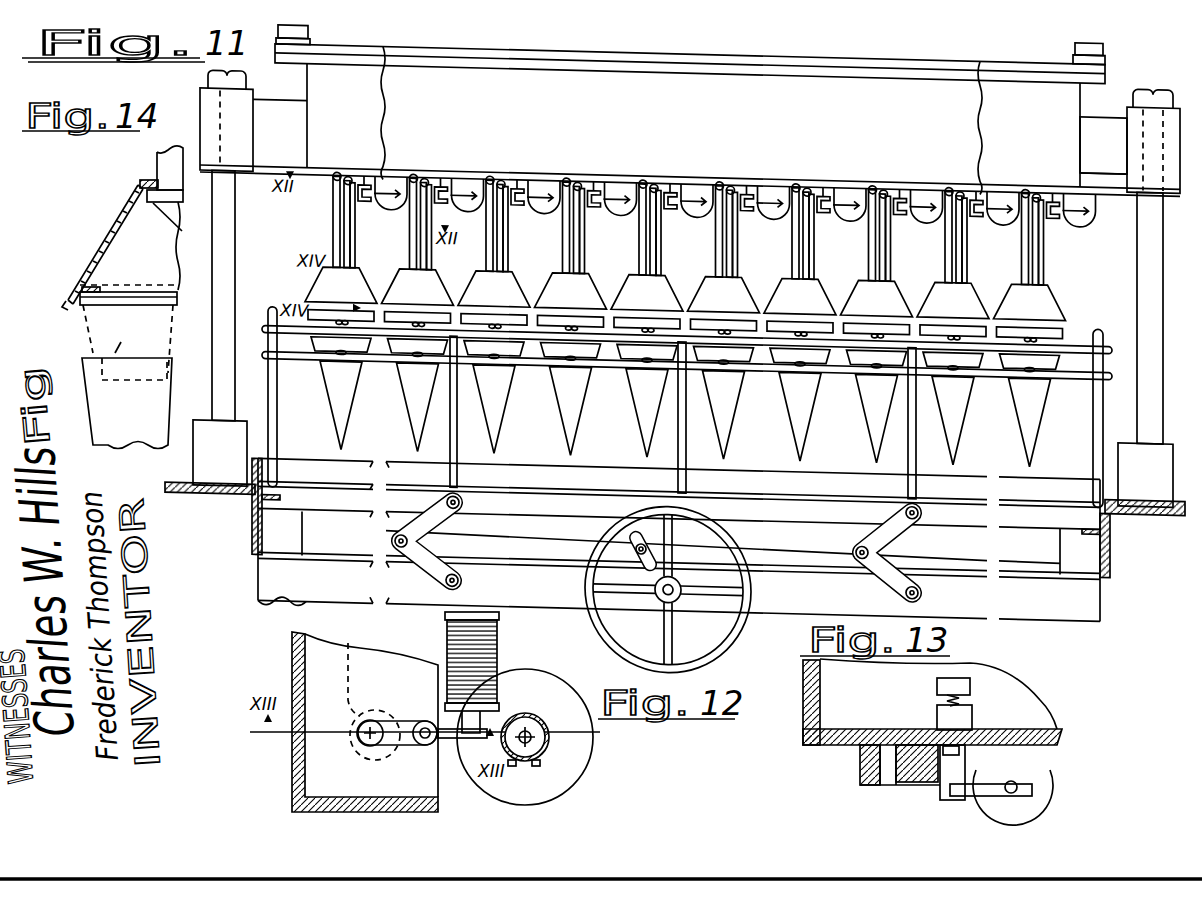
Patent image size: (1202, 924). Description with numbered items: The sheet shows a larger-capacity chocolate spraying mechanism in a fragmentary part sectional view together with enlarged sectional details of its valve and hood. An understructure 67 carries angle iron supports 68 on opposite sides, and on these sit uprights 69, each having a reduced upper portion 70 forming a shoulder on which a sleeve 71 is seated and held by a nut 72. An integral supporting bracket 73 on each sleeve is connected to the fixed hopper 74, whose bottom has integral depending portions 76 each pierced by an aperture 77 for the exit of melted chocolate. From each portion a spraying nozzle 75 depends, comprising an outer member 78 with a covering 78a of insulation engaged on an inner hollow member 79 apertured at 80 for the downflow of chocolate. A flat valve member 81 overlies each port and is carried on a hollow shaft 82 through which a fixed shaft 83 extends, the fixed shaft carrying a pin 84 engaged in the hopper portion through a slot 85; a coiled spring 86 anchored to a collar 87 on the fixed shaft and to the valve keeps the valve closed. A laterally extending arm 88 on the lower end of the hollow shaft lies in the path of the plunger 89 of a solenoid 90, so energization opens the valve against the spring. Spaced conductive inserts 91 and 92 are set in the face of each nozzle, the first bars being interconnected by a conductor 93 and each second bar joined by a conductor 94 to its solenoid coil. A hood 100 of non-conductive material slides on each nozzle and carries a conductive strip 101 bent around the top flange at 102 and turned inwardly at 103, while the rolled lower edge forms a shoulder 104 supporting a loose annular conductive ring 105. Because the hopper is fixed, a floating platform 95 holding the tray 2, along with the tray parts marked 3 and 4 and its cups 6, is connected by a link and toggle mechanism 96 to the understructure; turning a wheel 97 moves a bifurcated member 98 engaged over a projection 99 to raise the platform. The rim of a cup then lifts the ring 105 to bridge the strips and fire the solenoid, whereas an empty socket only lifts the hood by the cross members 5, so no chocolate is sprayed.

In FIG. 11, the tray 2 is at (1116, 307).
In FIG. 11, the vertical rod 3 is at (1094, 409).
In FIG. 11, the support bar 4 is at (1085, 354).
In FIG. 11, the cross members 5 is at (855, 381).
In FIG. 11, the cup 6 is at (566, 394).
In FIG. 14, the cup 6 is at (102, 392).
In FIG. 11, the understructure 67 is at (1084, 610).
In FIG. 11, the angle iron supports 68 is at (251, 502).
In FIG. 11, the uprights 69 is at (1140, 250).
In FIG. 11, the reduced upper portion 70 is at (1152, 132).
In FIG. 11, the sleeve 71 is at (1118, 201).
In FIG. 11, the nut 72 is at (1156, 70).
In FIG. 11, the supporting bracket 73 is at (1103, 145).
In FIG. 11, the hopper 74 is at (690, 110).
In FIG. 12, the hopper 74 is at (368, 670).
In FIG. 13, the hopper 74 is at (1028, 728).
In FIG. 11, the spraying nozzle 75 is at (636, 252).
In FIG. 12, the spraying nozzle 75 is at (553, 668).
In FIG. 14, the spraying nozzle 75 is at (160, 150).
In FIG. 11, the depending portions 76 is at (335, 172).
In FIG. 13, the depending portions 76 is at (905, 786).
In FIG. 12, the aperture 77 is at (388, 700).
In FIG. 13, the aperture 77 is at (866, 762).
In FIG. 12, the outer member 78 is at (592, 737).
In FIG. 12, the covering of insulation 78a is at (542, 733).
In FIG. 12, the inner hollow member 79 is at (550, 744).
In FIG. 12, the aperture 80 is at (532, 730).
In FIG. 12, the flat valve member 81 is at (392, 730).
In FIG. 13, the flat valve member 81 is at (880, 745).
In FIG. 13, the shaft 82 is at (966, 760).
In FIG. 12, the fixed shaft 83 is at (424, 742).
In FIG. 13, the fixed shaft 83 is at (972, 714).
In FIG. 13, the pin 84 is at (935, 750).
In FIG. 13, the slot 85 is at (950, 790).
In FIG. 13, the coiled spring 86 is at (945, 698).
In FIG. 12, the collar 87 is at (448, 762).
In FIG. 13, the collar 87 is at (970, 688).
In FIG. 11, the laterally extending arm 88 is at (545, 192).
In FIG. 12, the laterally extending arm 88 is at (466, 751).
In FIG. 13, the laterally extending arm 88 is at (1035, 791).
In FIG. 12, the plunger 89 is at (499, 706).
In FIG. 13, the plunger 89 is at (1018, 784).
In FIG. 11, the solenoid 90 is at (576, 190).
In FIG. 12, the solenoid 90 is at (497, 662).
In FIG. 13, the solenoid 90 is at (1030, 809).
In FIG. 11, the conductive insert 91 is at (490, 236).
In FIG. 12, the conductive insert 91 is at (514, 766).
In FIG. 11, the conductive insert 92 is at (502, 249).
In FIG. 12, the conductive insert 92 is at (536, 766).
In FIG. 14, the conductive insert 92 is at (141, 181).
In FIG. 11, the conductor 93 is at (514, 176).
In FIG. 11, the conductor 94 is at (545, 181).
In FIG. 11, the floating platform 95 is at (950, 510).
In FIG. 11, the link and toggle mechanism 96 is at (846, 535).
In FIG. 11, the wheel 97 is at (712, 640).
In FIG. 11, the bifurcated member 98 is at (648, 556).
In FIG. 11, the projection 99 is at (643, 522).
In FIG. 11, the hood 100 is at (400, 278).
In FIG. 12, the hood 100 is at (570, 780).
In FIG. 14, the hood 100 is at (106, 236).
In FIG. 14, the conductive strip 101 is at (122, 207).
In FIG. 14, the bent portion 102 is at (138, 186).
In FIG. 14, the inwardly turned end 103 is at (93, 287).
In FIG. 14, the shoulder 104 is at (68, 305).
In FIG. 14, the annular conductive ring 105 is at (118, 303).